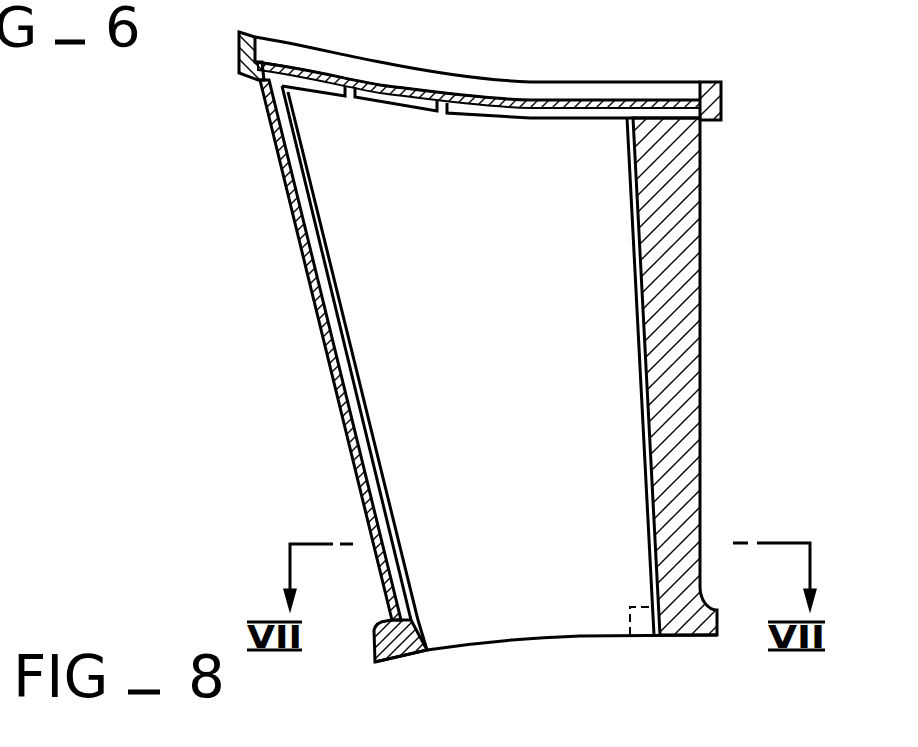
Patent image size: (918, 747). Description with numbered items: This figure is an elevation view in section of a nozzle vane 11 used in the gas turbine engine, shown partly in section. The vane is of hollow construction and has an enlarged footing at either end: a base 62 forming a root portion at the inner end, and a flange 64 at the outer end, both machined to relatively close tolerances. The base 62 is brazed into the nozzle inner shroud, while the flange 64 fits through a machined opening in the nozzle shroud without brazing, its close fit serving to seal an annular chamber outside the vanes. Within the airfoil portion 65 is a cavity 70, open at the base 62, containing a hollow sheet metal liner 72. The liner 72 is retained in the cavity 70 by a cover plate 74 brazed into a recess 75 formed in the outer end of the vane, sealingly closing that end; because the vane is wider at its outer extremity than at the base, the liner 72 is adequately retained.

The nozzle vane 11 is at (310, 399).
The base 62 is at (717, 627).
The flange 64 is at (723, 107).
The airfoil portion 65 is at (320, 318).
The cavity 70 is at (320, 233).
The sheet metal liner 72 is at (368, 441).
The cover plate 74 is at (492, 93).
The recess 75 is at (694, 88).